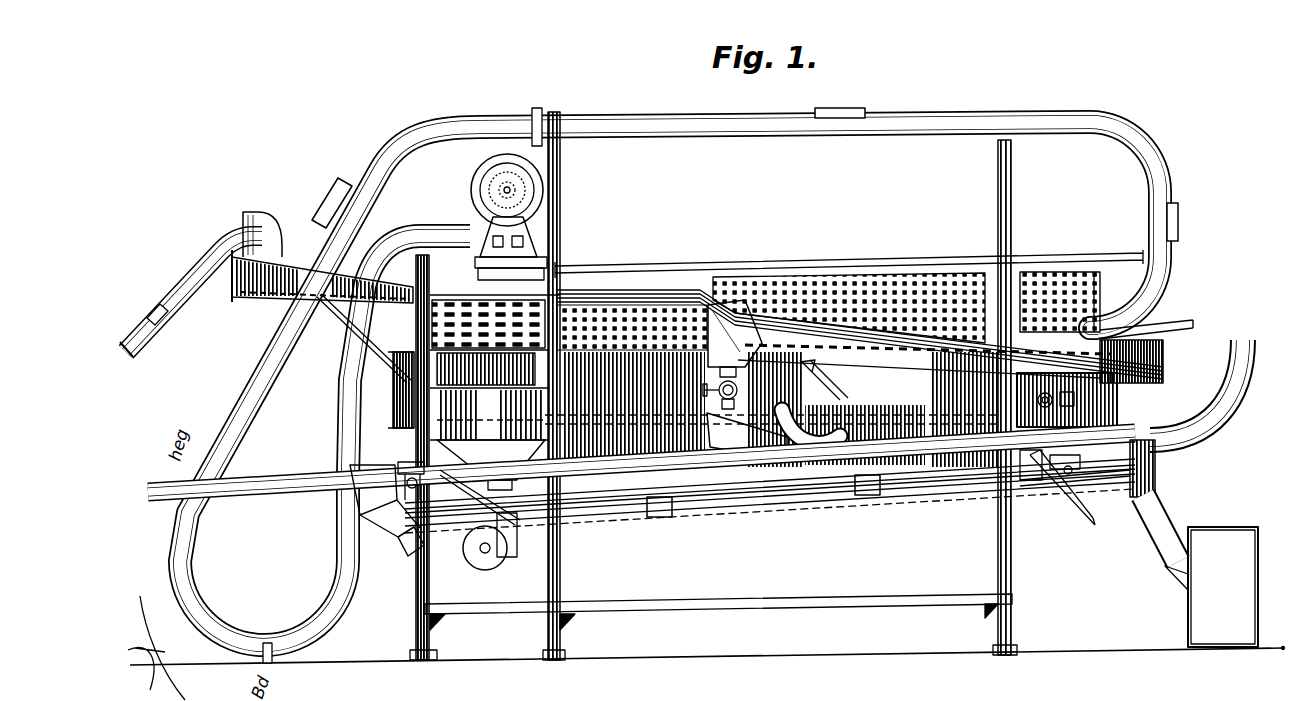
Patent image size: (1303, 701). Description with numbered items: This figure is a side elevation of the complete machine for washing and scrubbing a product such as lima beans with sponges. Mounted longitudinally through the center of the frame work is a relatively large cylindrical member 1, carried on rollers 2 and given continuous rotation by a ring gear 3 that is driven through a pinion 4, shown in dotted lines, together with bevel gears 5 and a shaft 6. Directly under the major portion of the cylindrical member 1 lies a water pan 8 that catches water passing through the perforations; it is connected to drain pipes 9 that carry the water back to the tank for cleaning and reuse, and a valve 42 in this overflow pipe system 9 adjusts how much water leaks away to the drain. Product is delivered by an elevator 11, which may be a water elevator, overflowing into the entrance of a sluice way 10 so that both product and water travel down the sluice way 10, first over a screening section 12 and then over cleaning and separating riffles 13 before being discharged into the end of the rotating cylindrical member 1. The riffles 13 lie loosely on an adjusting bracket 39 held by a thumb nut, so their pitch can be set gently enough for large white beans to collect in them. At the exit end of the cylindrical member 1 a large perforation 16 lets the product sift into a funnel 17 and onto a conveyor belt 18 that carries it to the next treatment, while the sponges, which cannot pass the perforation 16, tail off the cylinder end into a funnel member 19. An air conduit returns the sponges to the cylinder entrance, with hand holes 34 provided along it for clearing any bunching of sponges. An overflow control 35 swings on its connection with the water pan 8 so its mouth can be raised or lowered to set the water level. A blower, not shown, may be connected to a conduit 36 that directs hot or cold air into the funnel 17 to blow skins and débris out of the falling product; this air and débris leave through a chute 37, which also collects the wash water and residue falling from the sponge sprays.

The cylindrical member 1 is at (1070, 282).
The rollers 2 is at (540, 408).
The ring gear 3 is at (975, 275).
The pinion 4 is at (942, 484).
The bevel gears 5 is at (1118, 399).
The shaft 6 is at (1118, 417).
The water pan 8 is at (772, 409).
The drain pipes 9 is at (293, 484).
The sluice way 10 is at (290, 275).
The elevator 11 is at (180, 290).
The screening section 12 is at (735, 333).
The riffles 13 is at (913, 372).
The large perforation 16 is at (428, 324).
The funnel 17 is at (487, 432).
The conveyor belt 18 is at (710, 512).
The funnel member 19 is at (393, 412).
The hand holes 34 is at (838, 112).
The overflow control 35 is at (802, 442).
The conduit 36 is at (1197, 465).
The chute 37 is at (416, 552).
The adjusting bracket 39 is at (1158, 324).
The valve 42 is at (712, 386).